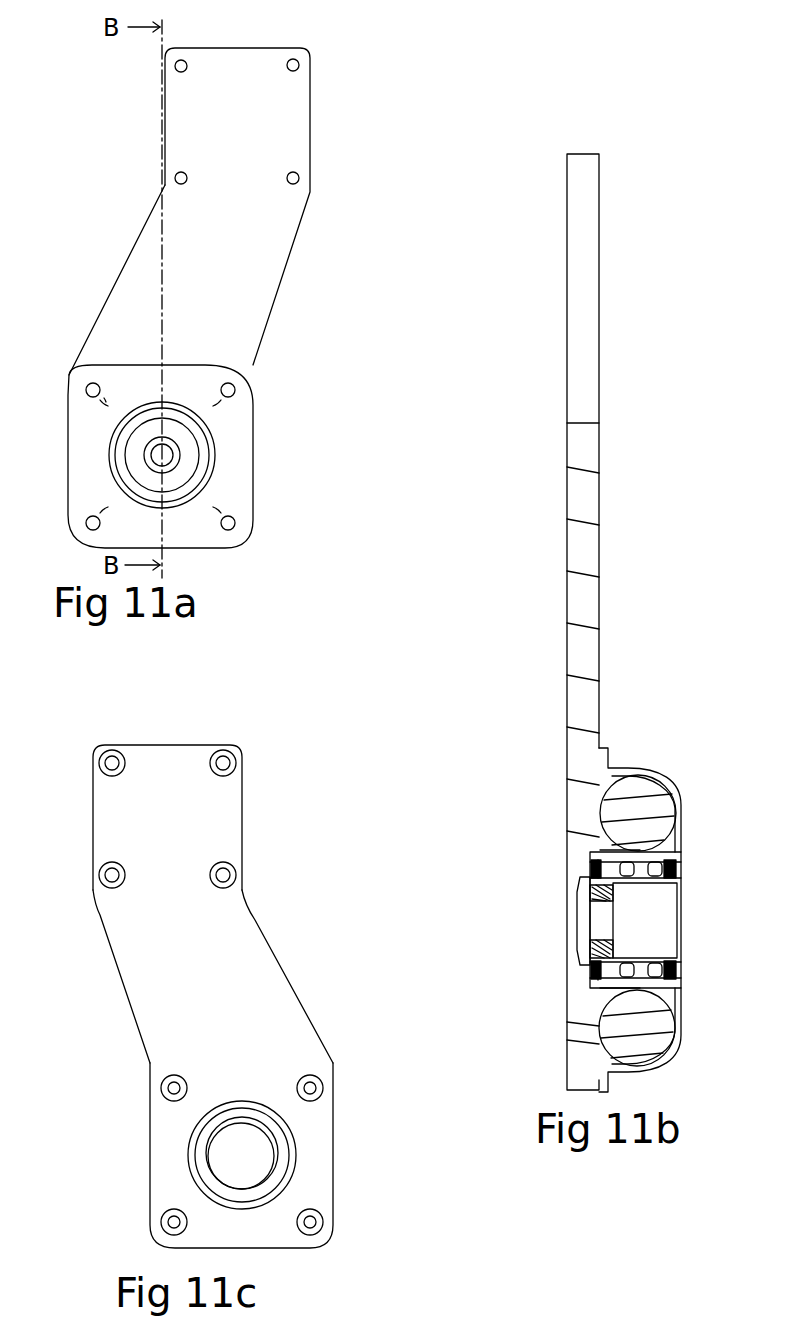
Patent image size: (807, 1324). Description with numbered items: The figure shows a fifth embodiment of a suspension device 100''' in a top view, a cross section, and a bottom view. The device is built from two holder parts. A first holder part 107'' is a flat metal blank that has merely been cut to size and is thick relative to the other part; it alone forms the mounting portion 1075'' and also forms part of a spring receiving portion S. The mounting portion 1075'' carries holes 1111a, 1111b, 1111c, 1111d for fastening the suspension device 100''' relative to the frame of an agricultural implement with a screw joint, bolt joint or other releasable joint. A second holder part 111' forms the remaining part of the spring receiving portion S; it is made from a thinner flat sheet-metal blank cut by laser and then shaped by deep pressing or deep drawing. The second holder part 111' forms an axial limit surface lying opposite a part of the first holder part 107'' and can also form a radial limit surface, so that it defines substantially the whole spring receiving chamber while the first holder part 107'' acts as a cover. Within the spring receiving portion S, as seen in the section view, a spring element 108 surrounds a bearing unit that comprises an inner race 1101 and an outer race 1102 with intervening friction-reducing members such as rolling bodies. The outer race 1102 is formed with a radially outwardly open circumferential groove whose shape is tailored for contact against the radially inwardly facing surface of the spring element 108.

In FIG. 11A, the suspension device 100''' is at (553, 34).
In FIG. 11A, the mounting portion 1075'' is at (430, 123).
In FIG. 11A, the hole 1111a is at (175, 68).
In FIG. 11A, the hole 1111b is at (299, 62).
In FIG. 11A, the hole 1111c is at (175, 180).
In FIG. 11A, the hole 1111d is at (298, 180).
In FIG. 11A, the first holder part 107'' is at (246, 211).
In FIG. 11B, the first holder part 107'' is at (643, 622).
In FIG. 11A, the spring receiving portion S is at (293, 427).
In FIG. 11A, the second holder part 111' is at (227, 456).
In FIG. 11B, the second holder part 111' is at (677, 910).
In FIG. 11B, the spring element 108 is at (640, 813).
In FIG. 11B, the outer race 1102 is at (668, 840).
In FIG. 11B, the inner race 1101 is at (640, 958).